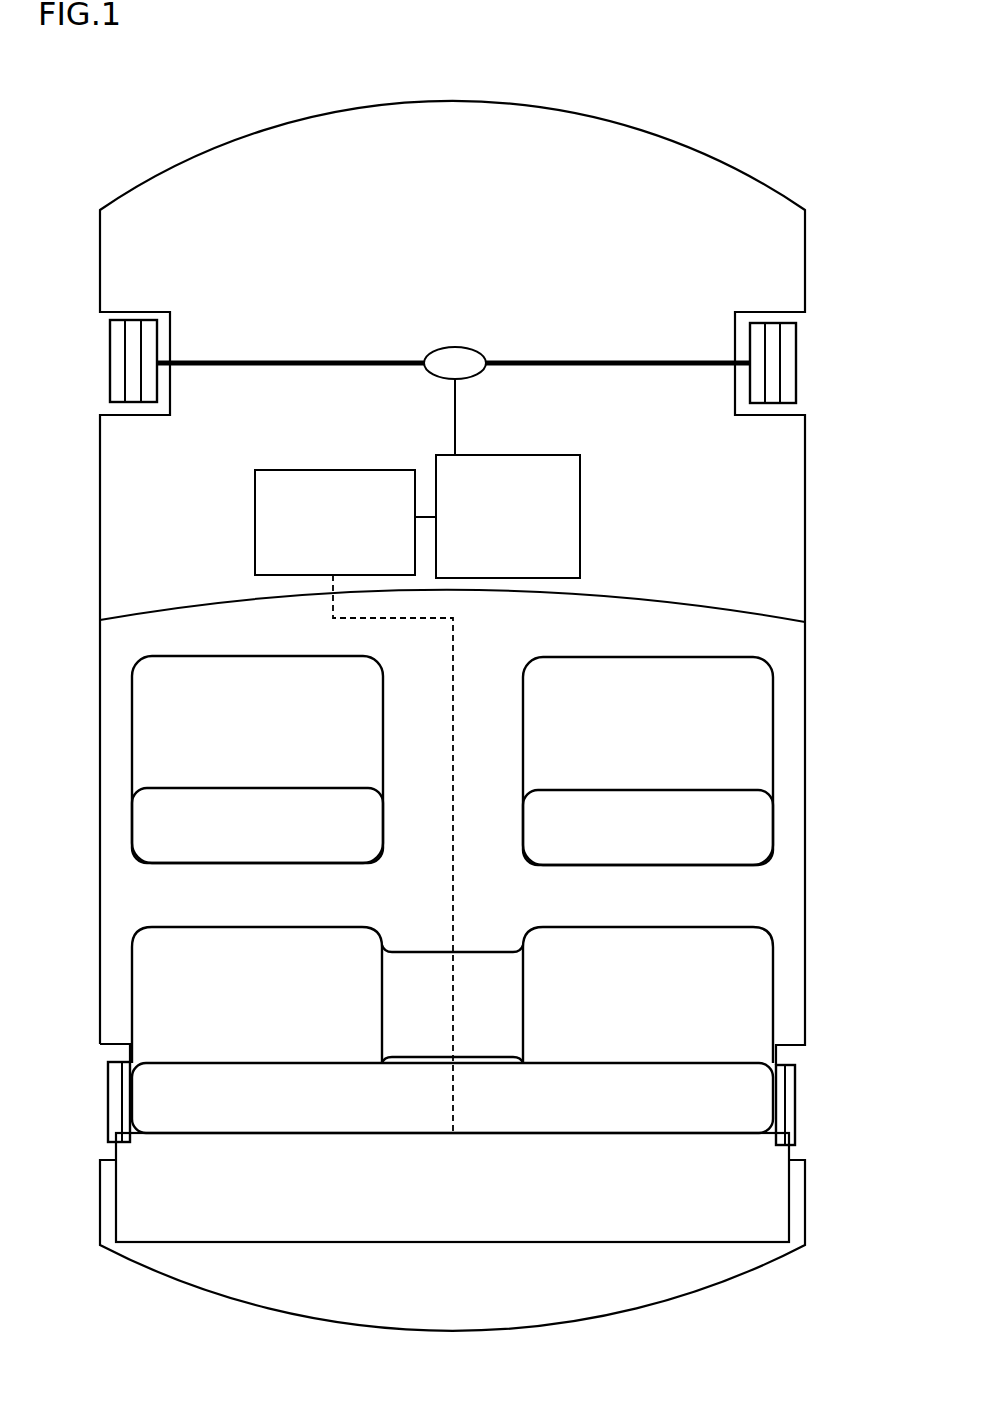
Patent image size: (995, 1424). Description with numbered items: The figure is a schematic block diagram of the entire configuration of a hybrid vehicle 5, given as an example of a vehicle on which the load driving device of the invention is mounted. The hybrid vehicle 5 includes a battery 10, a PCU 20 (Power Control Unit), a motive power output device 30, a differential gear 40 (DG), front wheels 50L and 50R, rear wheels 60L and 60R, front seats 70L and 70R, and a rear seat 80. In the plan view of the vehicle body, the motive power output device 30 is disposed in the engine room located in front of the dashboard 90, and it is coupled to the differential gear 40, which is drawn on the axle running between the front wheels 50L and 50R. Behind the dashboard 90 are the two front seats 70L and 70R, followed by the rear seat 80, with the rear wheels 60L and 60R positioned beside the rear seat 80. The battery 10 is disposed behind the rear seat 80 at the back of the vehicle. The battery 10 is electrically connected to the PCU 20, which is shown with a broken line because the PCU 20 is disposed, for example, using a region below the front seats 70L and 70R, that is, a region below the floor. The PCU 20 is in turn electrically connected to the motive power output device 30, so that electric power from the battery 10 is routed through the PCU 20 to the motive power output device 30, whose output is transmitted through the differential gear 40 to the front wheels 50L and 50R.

The hybrid vehicle 5 is at (467, 43).
The battery 10 is at (453, 1242).
The PCU (Power Control Unit) 20 is at (278, 480).
The motive power output device 30 is at (565, 470).
The differential gear (DG) 40 is at (457, 345).
The front wheel 50L is at (120, 362).
The front wheel 50R is at (787, 365).
The rear wheel 60L is at (116, 1102).
The rear wheel 60R is at (786, 1105).
The front seat 70L is at (256, 670).
The front seat 70R is at (653, 672).
The rear seat 80 is at (256, 940).
The dashboard 90 is at (756, 612).